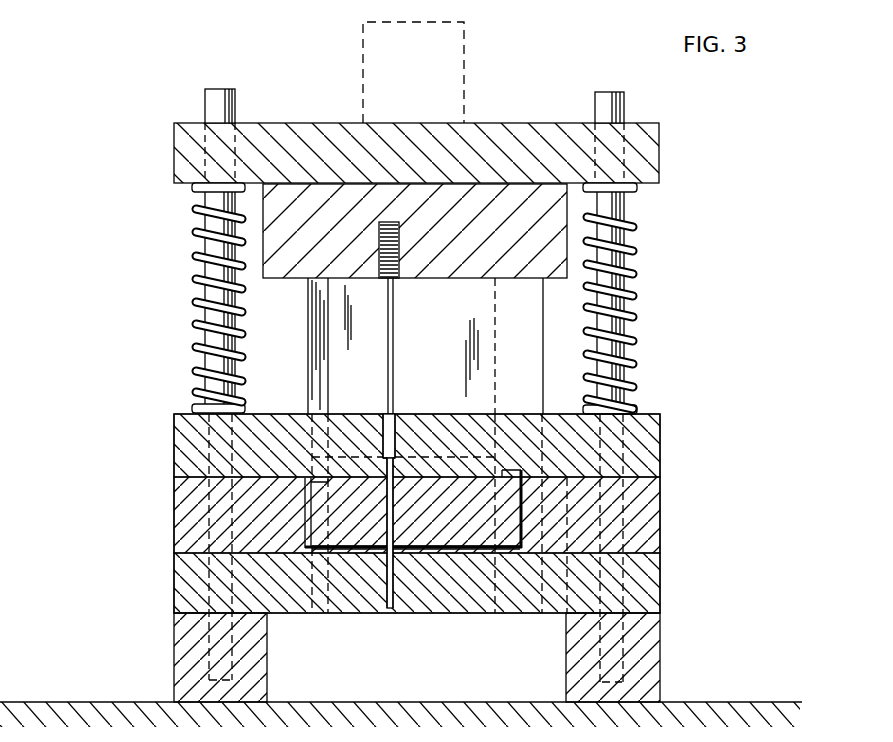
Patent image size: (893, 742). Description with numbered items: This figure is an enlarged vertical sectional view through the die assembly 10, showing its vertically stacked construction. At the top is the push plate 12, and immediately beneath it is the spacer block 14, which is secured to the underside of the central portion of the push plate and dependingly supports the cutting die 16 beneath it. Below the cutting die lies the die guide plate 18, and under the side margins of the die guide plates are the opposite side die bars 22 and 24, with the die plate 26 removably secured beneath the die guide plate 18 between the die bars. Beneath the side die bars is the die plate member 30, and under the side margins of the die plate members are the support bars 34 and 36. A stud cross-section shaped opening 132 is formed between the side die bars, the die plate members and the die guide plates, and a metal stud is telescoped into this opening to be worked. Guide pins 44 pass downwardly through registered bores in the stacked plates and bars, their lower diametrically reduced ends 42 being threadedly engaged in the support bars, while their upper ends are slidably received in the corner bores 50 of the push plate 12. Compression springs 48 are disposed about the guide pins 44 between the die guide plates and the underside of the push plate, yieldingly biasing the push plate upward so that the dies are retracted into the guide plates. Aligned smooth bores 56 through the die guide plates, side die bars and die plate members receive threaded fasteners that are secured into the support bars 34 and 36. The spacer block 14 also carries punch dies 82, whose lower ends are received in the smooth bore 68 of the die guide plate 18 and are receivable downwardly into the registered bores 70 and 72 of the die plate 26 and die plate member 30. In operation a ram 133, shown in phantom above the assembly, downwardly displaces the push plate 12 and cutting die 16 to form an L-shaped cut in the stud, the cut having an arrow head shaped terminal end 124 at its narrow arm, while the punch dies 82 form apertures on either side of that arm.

The die assembly 10 is at (190, 120).
The top push plate 12 is at (648, 158).
The spacer block 14 is at (553, 224).
The cutting die 16 is at (530, 380).
The die guide plate 18 is at (650, 457).
The side die bar 22 is at (647, 503).
The side die bar 24 is at (174, 532).
The die plate 26 is at (472, 542).
The die plate member 30 is at (647, 592).
The support bar 34 is at (646, 680).
The support bar 36 is at (185, 668).
The lower diametrically reduced end 42 is at (623, 535).
The guide pin 44 is at (200, 286).
The compression spring 48 is at (633, 348).
The corner bore 50 is at (238, 158).
The smooth bore 56 is at (175, 500).
The smooth bore 68 is at (395, 445).
The bore 70 is at (400, 513).
The bore 72 is at (380, 582).
The punch die 82 is at (393, 326).
The arrow head shaped terminal end 124 is at (372, 390).
The stud cross-section shaped opening 132 is at (450, 550).
The ram 133 is at (363, 60).